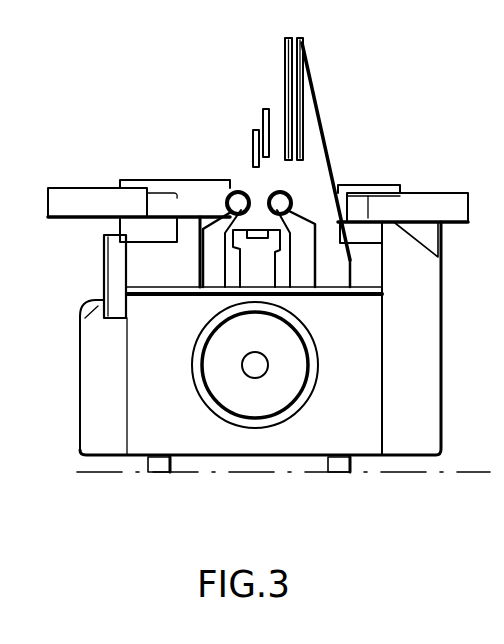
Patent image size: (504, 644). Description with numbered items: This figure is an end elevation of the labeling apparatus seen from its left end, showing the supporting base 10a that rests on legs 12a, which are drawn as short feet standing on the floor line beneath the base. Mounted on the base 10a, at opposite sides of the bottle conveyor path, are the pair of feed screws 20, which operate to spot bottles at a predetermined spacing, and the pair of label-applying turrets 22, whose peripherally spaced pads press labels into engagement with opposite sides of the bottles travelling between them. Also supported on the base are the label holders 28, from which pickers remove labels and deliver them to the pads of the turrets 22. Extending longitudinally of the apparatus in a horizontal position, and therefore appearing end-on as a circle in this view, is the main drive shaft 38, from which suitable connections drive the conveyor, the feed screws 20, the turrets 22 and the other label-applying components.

The supporting base 10a is at (143, 360).
The legs 12a is at (162, 474).
The feed screws 20 is at (228, 181).
The label-applying turrets 22 is at (147, 177).
The label holders 28 is at (73, 195).
The main drive shaft 38 is at (252, 366).